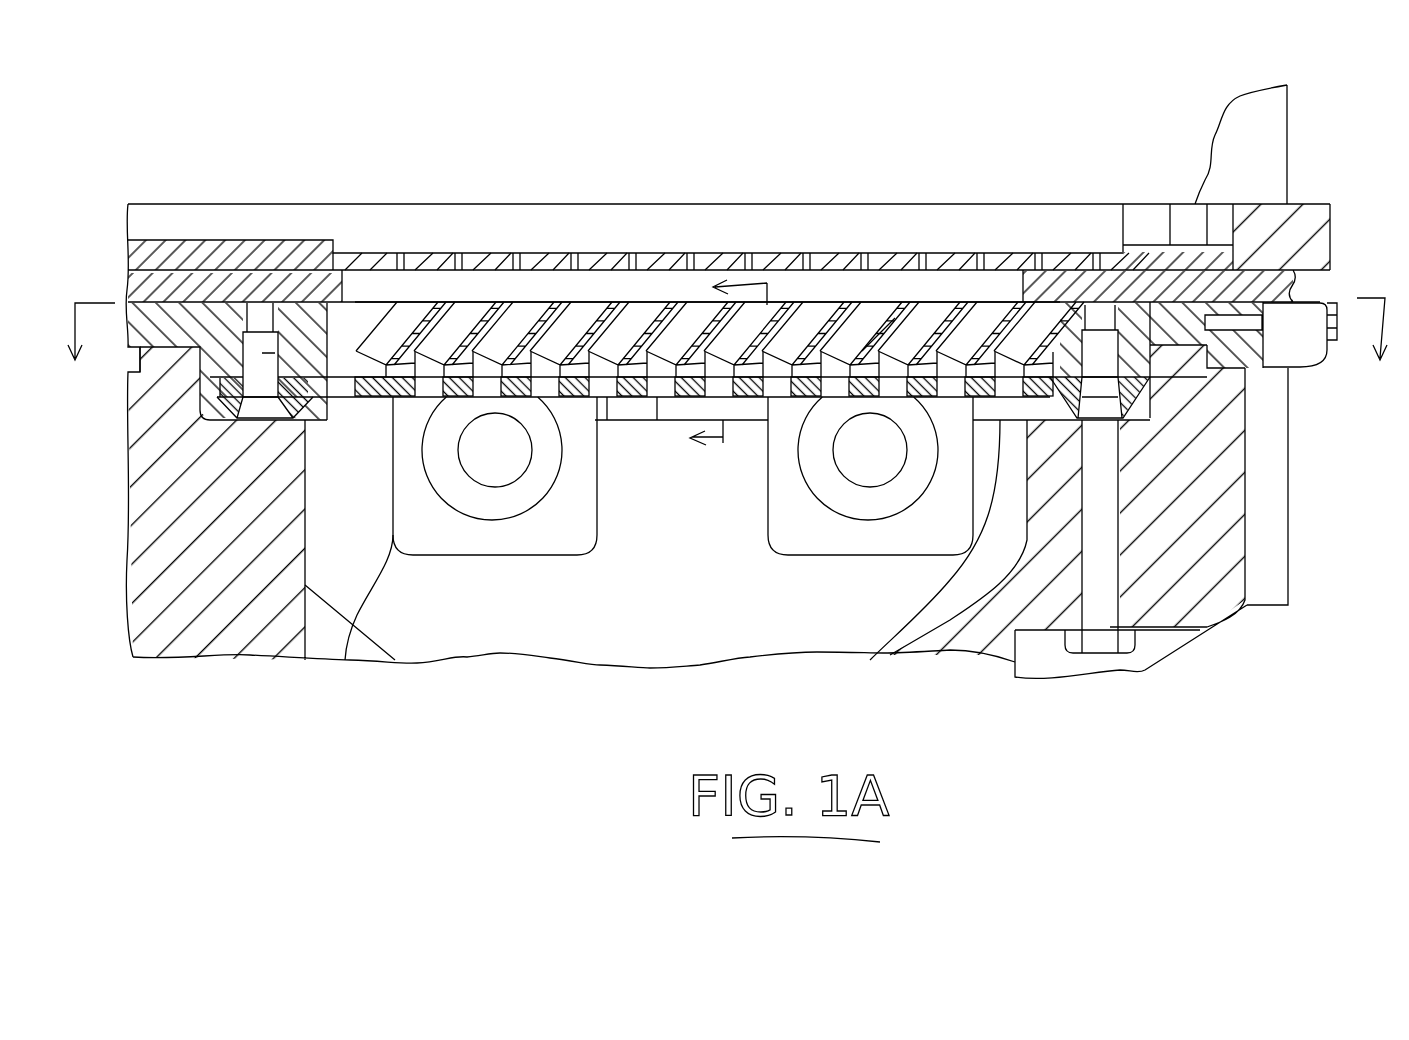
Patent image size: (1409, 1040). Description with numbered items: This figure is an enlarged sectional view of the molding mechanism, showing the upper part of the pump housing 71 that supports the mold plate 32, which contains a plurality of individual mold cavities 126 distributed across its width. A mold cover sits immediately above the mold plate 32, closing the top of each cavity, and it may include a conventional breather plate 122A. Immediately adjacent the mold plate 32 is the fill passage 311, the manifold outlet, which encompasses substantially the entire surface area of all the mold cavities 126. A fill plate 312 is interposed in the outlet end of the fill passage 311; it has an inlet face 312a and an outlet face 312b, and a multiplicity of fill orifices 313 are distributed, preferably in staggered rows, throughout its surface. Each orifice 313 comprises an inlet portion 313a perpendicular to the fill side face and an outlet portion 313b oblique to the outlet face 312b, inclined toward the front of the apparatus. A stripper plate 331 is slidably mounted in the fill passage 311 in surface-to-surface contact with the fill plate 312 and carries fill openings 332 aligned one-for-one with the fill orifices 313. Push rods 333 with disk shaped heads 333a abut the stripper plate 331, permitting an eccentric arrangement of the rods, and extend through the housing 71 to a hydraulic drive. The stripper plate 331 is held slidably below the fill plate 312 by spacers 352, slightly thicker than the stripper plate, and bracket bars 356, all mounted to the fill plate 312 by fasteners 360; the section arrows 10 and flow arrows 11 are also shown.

The section line arrows 10 is at (727, 352).
The gas flow direction arrows 11 is at (728, 380).
The mold plate 32 is at (233, 287).
The pump housing 71 is at (228, 653).
The breather plate 122A is at (835, 218).
The mold cavities 126 is at (395, 265).
The fill passage 311 is at (508, 640).
The fill plate 312 is at (647, 302).
The inlet face 312a is at (350, 640).
The outlet face 312b is at (432, 304).
The fill orifices 313 is at (540, 256).
The inlet portion 313a is at (835, 370).
The outlet portion 313b is at (873, 317).
The stripper plate 331 is at (683, 400).
The fill openings 332 is at (657, 400).
The push rods 333 is at (508, 452).
The disk shaped heads 333a is at (555, 508).
The spacers 352 is at (133, 287).
The bracket bars 356 is at (350, 420).
The fasteners 360 is at (285, 325).